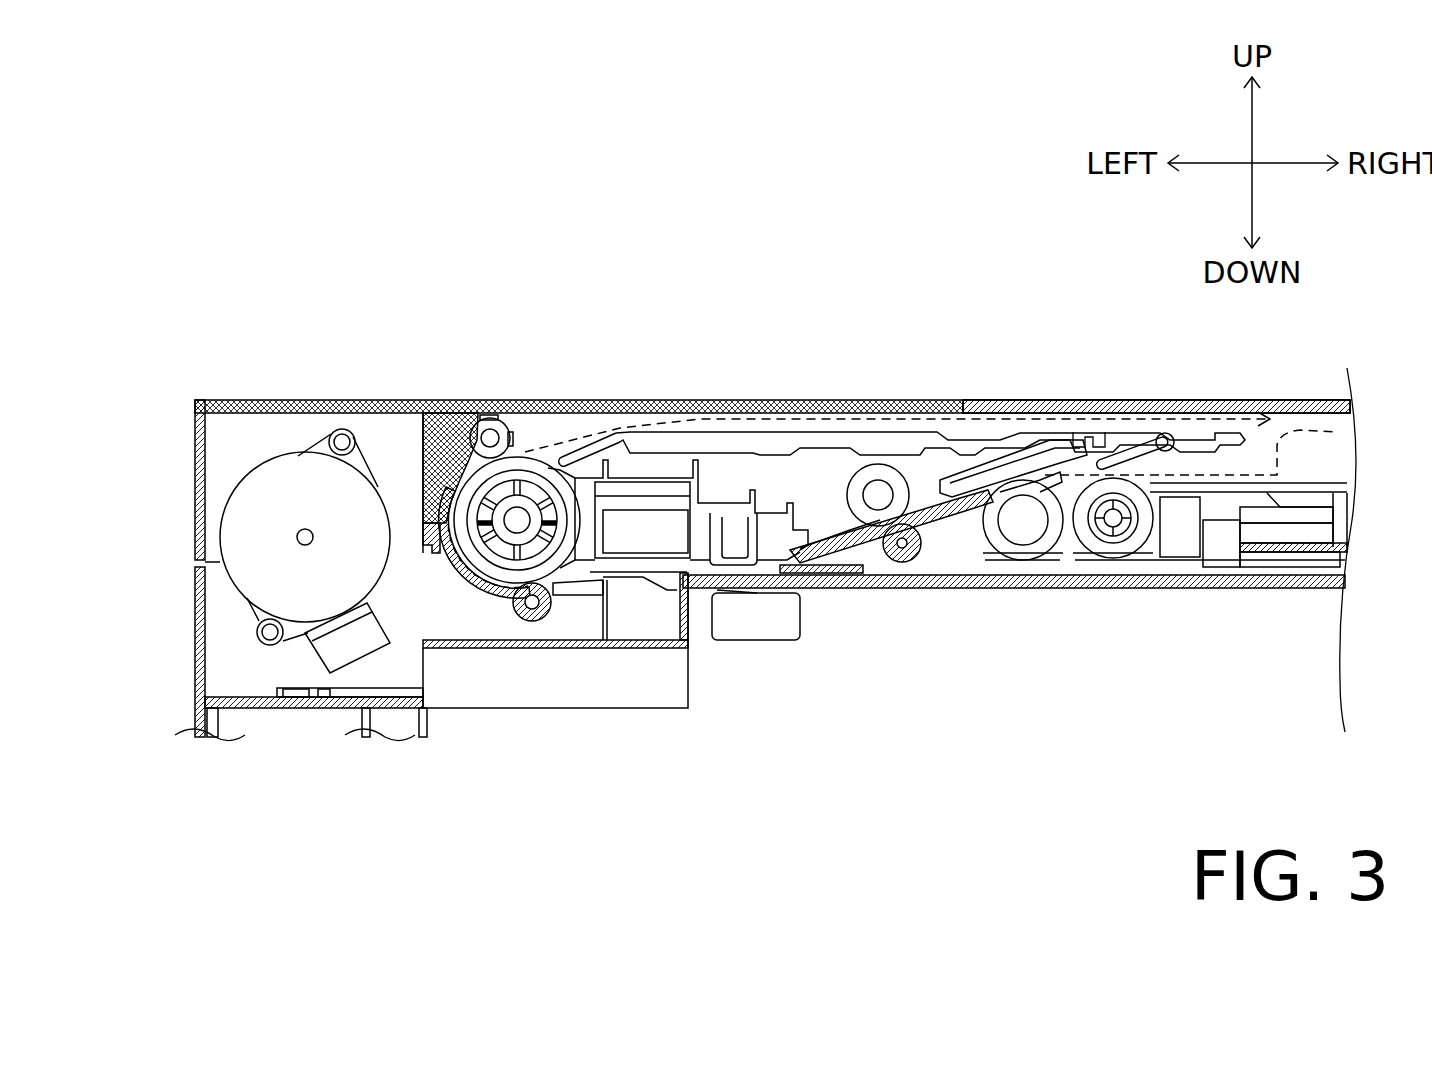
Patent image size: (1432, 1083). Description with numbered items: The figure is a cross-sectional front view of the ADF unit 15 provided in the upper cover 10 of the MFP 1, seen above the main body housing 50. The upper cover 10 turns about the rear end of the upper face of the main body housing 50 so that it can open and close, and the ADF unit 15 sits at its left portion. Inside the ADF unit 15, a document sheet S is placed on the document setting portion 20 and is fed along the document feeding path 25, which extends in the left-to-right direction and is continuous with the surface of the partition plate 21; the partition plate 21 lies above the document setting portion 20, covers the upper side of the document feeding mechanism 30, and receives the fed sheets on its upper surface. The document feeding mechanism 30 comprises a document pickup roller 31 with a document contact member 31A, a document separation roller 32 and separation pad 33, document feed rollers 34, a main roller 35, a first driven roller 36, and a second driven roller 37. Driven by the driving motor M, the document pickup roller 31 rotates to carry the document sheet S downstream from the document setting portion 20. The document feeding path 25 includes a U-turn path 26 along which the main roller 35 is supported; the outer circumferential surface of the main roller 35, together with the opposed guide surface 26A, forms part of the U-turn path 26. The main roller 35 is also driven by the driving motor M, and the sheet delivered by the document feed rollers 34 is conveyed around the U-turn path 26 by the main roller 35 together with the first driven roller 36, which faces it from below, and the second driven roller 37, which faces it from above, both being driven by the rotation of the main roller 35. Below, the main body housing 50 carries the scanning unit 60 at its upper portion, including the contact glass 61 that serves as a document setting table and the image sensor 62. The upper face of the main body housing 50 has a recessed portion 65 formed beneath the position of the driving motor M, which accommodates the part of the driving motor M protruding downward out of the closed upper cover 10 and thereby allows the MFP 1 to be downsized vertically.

The MFP 1 is at (218, 368).
The upper cover 10 is at (196, 432).
The ADF unit 15 is at (570, 430).
The document setting portion 20 is at (1335, 487).
The partition plate 21 is at (915, 436).
The document feeding path 25 is at (706, 411).
The U-turn path 26 is at (424, 512).
The guide surface 26A is at (441, 500).
The document feeding mechanism 30 is at (936, 550).
The document pickup roller 31 is at (1113, 553).
The document contact member 31A is at (1150, 452).
The document separation roller 32 is at (1021, 553).
The separation pad 33 is at (1013, 472).
The document feed rollers 34 is at (890, 563).
The main roller 35 is at (472, 553).
The first driven roller 36 is at (537, 621).
The second driven roller 37 is at (497, 418).
The main body housing 50 is at (200, 722).
The scanning unit 60 is at (1290, 635).
The contact glass 61 is at (1220, 584).
The image sensor 62 is at (755, 622).
The recessed portion 65 is at (228, 641).
The driving motor M is at (232, 522).
The document sheet S is at (1081, 418).